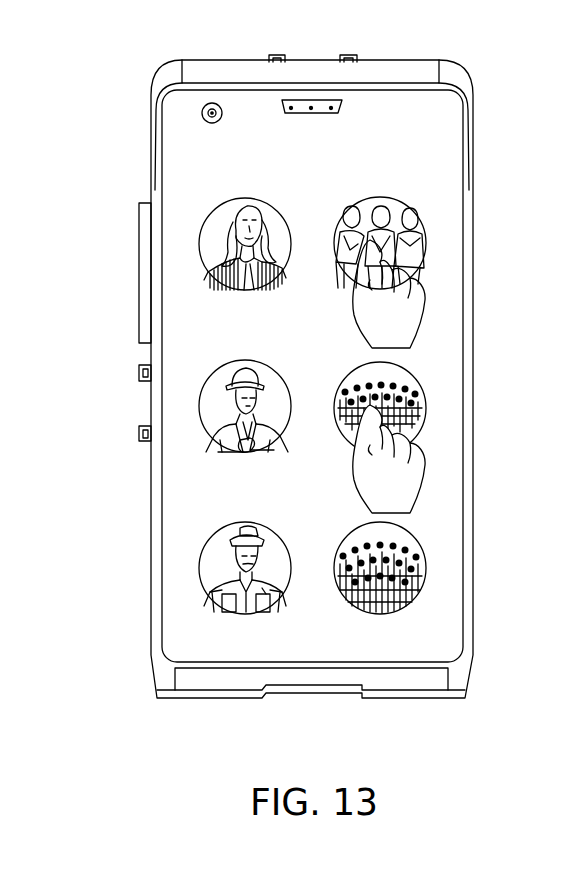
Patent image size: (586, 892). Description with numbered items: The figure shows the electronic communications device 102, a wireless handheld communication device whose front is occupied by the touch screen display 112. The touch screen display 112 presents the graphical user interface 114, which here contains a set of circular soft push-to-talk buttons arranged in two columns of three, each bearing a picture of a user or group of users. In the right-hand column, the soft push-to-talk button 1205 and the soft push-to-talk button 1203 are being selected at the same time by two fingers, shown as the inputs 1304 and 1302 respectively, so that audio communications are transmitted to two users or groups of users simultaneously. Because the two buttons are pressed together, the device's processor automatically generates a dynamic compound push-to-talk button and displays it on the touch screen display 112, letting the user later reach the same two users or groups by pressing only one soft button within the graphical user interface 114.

The electronic communications device 102 is at (151, 148).
The touch screen display 112 is at (175, 408).
The soft push-to-talk button 1205 is at (428, 247).
The input 1304 is at (430, 305).
The soft push-to-talk button 1203 is at (428, 412).
The input 1302 is at (430, 470).
The graphical user interface 114 is at (425, 602).